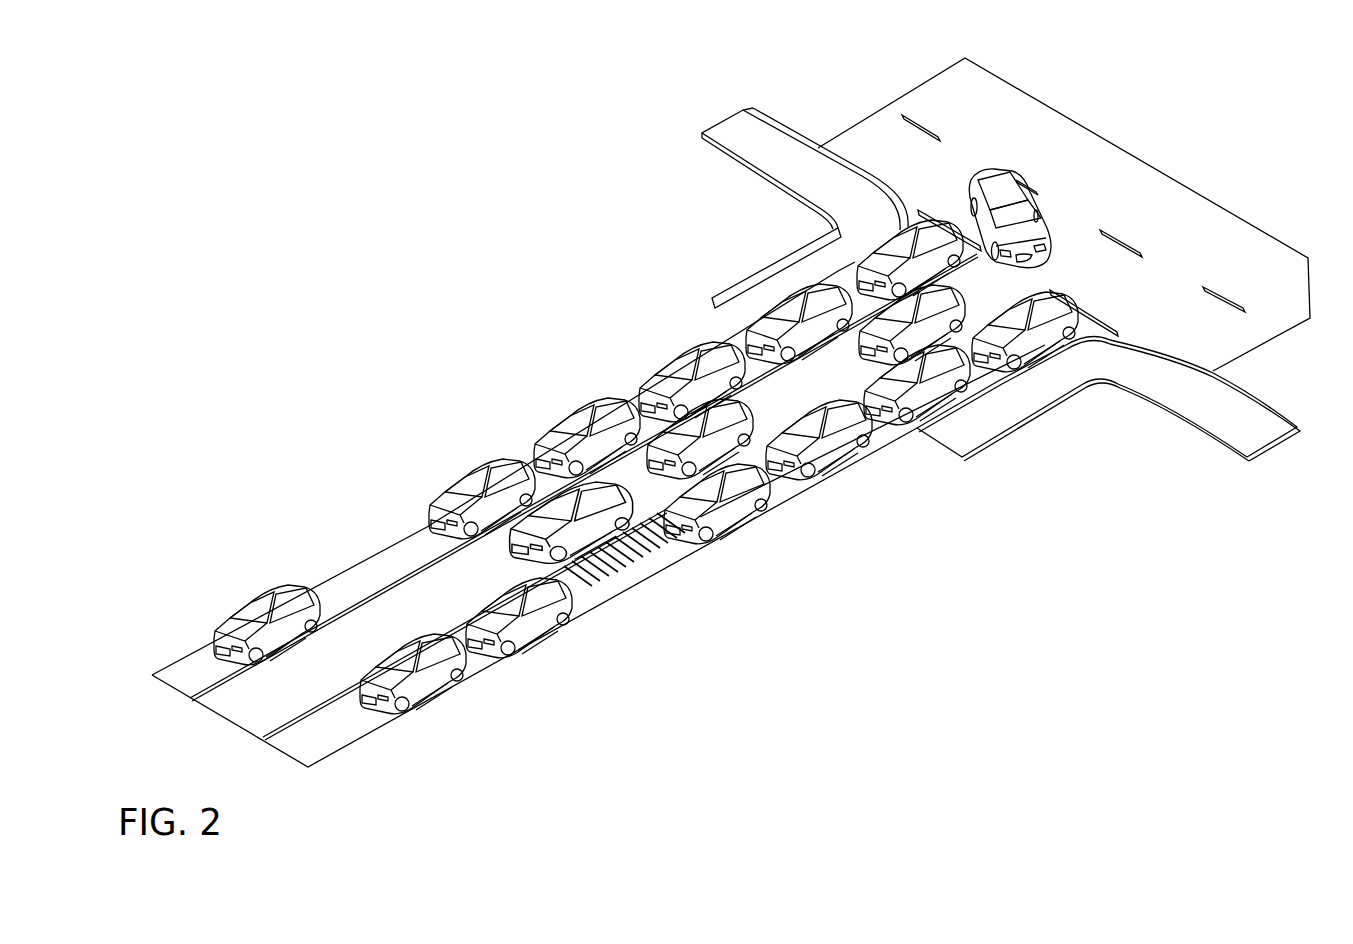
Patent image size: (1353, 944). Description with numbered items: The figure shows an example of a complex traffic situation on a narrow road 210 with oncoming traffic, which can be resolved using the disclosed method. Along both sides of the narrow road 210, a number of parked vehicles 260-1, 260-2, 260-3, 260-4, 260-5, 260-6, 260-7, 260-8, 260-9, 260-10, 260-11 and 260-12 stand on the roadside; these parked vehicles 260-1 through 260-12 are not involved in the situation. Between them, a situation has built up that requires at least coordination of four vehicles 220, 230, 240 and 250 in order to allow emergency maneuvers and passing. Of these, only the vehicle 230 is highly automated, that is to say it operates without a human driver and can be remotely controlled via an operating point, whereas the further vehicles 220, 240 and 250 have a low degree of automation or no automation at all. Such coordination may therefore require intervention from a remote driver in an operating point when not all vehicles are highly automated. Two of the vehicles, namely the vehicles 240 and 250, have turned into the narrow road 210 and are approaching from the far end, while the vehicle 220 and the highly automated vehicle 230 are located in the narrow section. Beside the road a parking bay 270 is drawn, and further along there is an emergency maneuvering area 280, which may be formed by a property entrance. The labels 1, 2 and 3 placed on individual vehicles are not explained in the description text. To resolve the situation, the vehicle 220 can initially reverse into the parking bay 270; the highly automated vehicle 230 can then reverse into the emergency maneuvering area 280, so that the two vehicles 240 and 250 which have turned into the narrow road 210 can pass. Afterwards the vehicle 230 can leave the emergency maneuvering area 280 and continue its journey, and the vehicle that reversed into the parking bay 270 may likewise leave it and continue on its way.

The narrow road 210 is at (892, 458).
The vehicle 220 is at (623, 545).
The highly automated vehicle 230 is at (735, 430).
The vehicle 240 is at (846, 295).
The vehicle 250 is at (1038, 179).
The parked vehicle 260-1 is at (270, 600).
The parked vehicle 260-2 is at (484, 482).
The parked vehicle 260-3 is at (590, 420).
The parked vehicle 260-4 is at (693, 365).
The parked vehicle 260-5 is at (795, 298).
The parked vehicle 260-6 is at (900, 238).
The parked vehicle 260-7 is at (417, 685).
The parked vehicle 260-8 is at (533, 625).
The parked vehicle 260-9 is at (738, 502).
The parked vehicle 260-10 is at (838, 445).
The parked vehicle 260-11 is at (940, 388).
The parked vehicle 260-12 is at (1032, 338).
The parking bay 270 is at (358, 557).
The emergency maneuvering area 280 is at (720, 710).
The vehicle 1 is at (571, 522).
The vehicle 2 is at (912, 325).
The vehicle 3 is at (1010, 218).